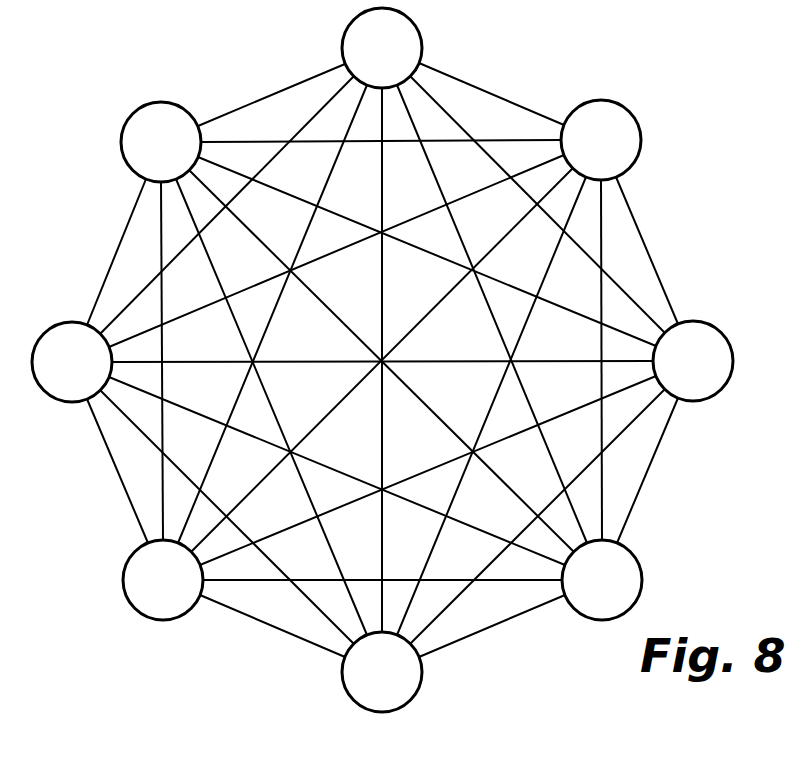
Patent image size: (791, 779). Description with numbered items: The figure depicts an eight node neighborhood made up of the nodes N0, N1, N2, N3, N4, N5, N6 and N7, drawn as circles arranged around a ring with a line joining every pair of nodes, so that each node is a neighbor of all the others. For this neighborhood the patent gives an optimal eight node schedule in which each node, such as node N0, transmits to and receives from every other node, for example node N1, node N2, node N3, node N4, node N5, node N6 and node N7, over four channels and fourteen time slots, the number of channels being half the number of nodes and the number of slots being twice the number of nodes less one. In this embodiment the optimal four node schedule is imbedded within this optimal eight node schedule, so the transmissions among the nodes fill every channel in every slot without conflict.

The node N0 is at (161, 142).
The node N1 is at (163, 580).
The node N2 is at (602, 580).
The node N3 is at (601, 140).
The node N4 is at (72, 362).
The node N5 is at (382, 672).
The node N6 is at (693, 361).
The node N7 is at (382, 48).